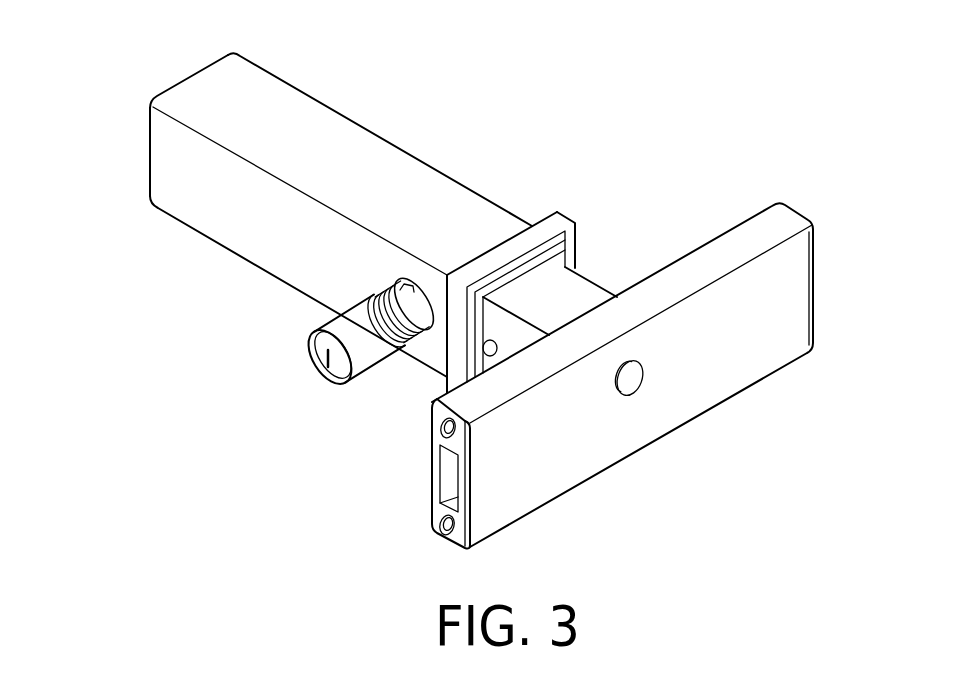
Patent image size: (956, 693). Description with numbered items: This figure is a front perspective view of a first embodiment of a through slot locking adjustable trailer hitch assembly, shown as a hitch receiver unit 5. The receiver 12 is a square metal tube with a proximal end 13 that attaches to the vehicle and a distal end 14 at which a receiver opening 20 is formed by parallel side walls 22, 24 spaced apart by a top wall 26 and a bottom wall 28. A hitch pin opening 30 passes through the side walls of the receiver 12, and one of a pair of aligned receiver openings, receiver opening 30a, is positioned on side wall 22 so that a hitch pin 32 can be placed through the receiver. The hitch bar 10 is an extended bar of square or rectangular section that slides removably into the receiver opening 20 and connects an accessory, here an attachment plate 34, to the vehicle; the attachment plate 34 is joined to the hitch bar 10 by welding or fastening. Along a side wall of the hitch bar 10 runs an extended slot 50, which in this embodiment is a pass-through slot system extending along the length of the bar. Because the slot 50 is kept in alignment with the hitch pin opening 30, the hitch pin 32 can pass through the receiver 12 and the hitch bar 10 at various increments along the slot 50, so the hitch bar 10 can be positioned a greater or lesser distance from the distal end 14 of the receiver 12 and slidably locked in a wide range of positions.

The hitch receiver unit 5 is at (128, 321).
The hitch bar 10 is at (587, 288).
The receiver 12 is at (573, 212).
The proximal end 13 is at (167, 89).
The distal end 14 is at (577, 238).
The receiver opening 20 is at (553, 255).
The side wall 22 is at (175, 157).
The side wall 24 is at (267, 67).
The top wall 26 is at (212, 88).
The bottom wall 28 is at (173, 220).
The hitch pin opening 30 is at (398, 285).
The receiver opening 30a is at (426, 337).
The hitch pin 32 is at (311, 355).
The attachment plate 34 is at (721, 392).
The slot 50 is at (490, 352).